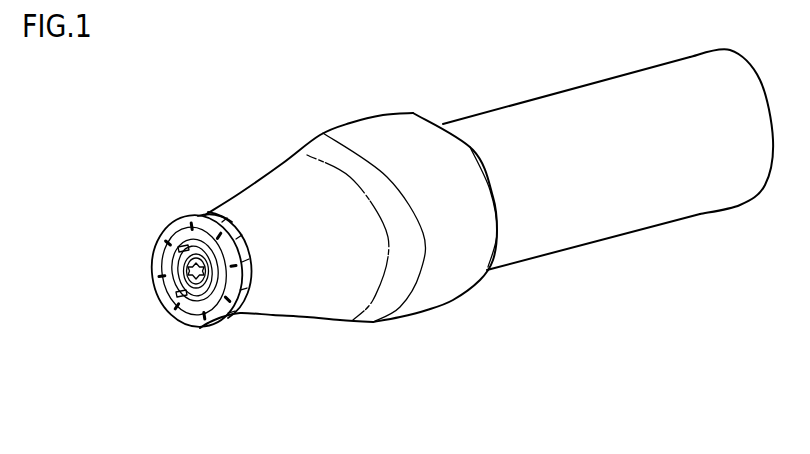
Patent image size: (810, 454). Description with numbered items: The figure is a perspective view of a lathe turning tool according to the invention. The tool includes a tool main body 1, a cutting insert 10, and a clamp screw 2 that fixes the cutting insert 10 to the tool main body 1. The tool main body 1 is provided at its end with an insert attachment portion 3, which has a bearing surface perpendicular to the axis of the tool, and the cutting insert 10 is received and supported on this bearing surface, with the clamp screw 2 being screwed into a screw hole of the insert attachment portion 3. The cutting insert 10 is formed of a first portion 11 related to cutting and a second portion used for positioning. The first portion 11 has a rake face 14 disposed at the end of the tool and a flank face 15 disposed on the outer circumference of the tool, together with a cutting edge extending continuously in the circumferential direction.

The tool main body 1 is at (363, 121).
The clamp screw 2 is at (162, 282).
The insert attachment portion 3 is at (250, 307).
The cutting insert 10 is at (166, 314).
The first portion 11 is at (225, 320).
The rake face 14 is at (152, 243).
The flank face 15 is at (212, 215).